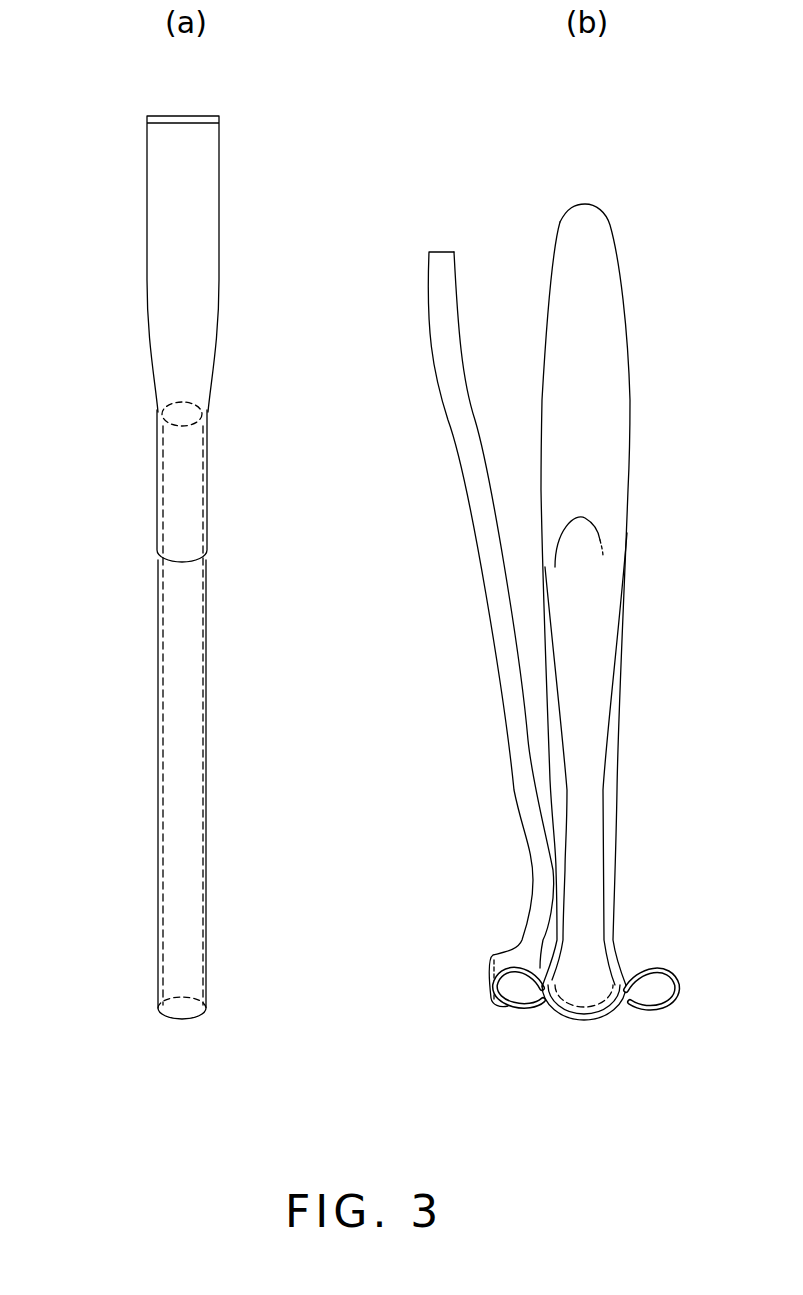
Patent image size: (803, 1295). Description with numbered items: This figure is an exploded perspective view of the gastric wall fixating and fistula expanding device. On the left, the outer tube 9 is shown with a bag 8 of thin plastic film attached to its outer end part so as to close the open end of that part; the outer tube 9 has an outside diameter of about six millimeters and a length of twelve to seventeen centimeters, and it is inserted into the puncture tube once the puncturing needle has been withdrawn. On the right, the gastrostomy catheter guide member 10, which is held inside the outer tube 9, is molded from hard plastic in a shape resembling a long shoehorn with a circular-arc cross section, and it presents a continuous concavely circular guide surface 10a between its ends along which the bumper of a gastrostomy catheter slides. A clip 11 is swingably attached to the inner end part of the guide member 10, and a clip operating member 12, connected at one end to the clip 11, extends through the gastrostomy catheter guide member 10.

The bag 8 is at (173, 228).
The outer tube 9 is at (182, 770).
The gastrostomy catheter guide member 10 is at (612, 657).
The guide surface 10a is at (588, 355).
The clip 11 is at (653, 973).
The clip operating member 12 is at (460, 433).